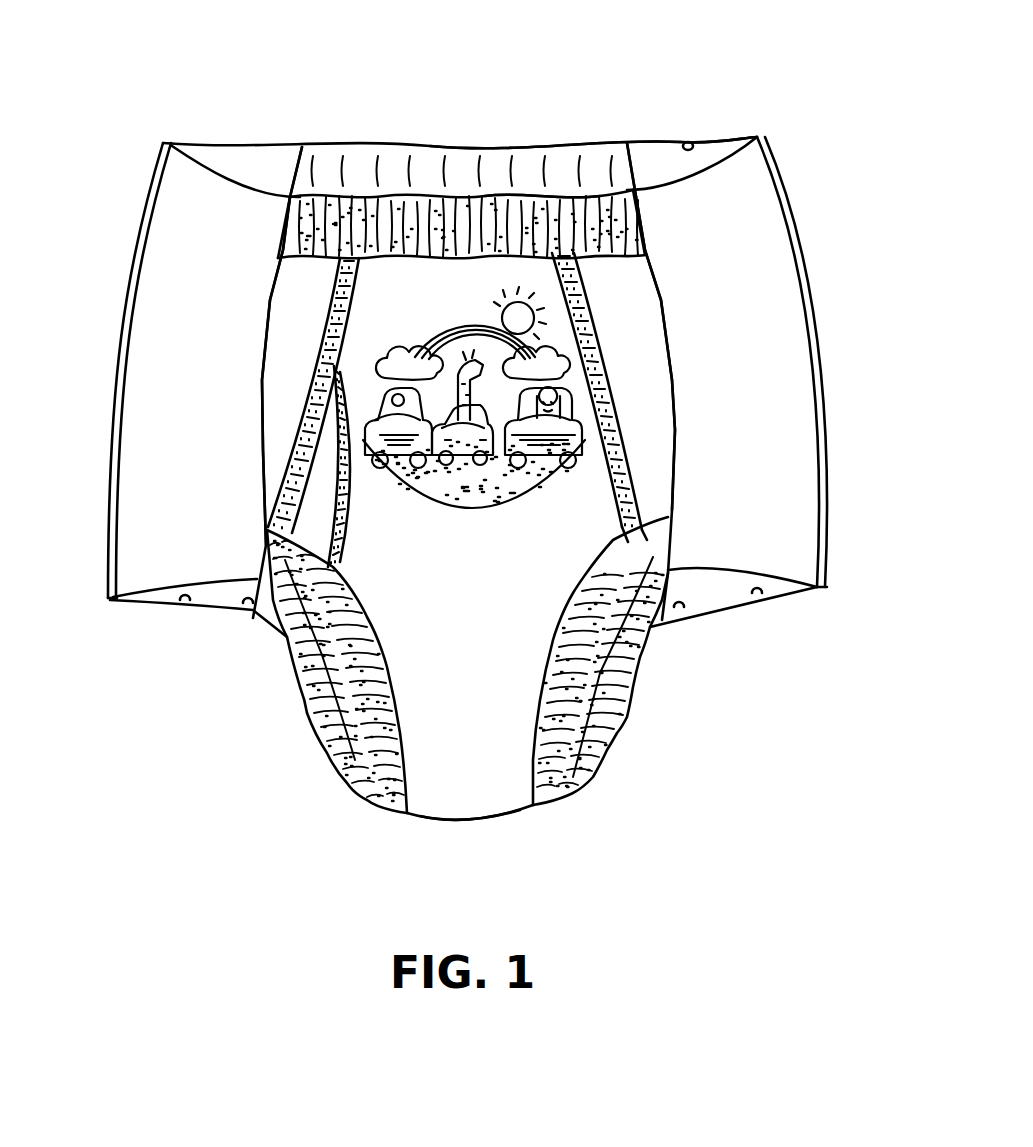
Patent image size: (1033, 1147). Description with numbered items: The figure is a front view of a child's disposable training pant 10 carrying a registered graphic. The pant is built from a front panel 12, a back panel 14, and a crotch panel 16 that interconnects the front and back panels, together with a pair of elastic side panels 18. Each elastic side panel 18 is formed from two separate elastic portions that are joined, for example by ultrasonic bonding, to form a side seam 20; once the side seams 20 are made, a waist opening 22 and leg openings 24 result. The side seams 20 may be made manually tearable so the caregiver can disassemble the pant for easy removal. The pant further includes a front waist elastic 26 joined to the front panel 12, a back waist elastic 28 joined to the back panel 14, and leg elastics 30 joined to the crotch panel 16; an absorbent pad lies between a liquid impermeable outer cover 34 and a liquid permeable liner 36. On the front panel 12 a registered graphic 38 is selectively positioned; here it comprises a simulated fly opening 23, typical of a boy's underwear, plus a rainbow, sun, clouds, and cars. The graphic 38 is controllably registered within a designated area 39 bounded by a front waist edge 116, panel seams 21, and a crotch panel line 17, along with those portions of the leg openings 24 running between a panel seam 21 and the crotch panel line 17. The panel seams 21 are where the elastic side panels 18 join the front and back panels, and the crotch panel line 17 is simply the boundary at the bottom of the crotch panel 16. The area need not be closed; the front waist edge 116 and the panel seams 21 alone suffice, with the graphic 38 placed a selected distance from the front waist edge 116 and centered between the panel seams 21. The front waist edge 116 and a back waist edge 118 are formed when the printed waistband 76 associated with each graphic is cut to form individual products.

The training pant 10 is at (650, 55).
The front panel 12 is at (300, 322).
The back panel 14 is at (282, 160).
The crotch panel 16 is at (437, 840).
The crotch panel line 17 is at (505, 820).
The elastic side panels 18 is at (158, 402).
The side seam 20 is at (127, 292).
The panel seams 21 is at (262, 383).
The waist opening 22 is at (688, 143).
The simulated fly opening 23 is at (290, 467).
The leg openings 24 is at (185, 600).
The front waist elastic 26 is at (613, 228).
The back waist elastic 28 is at (424, 165).
The leg elastics 30 is at (340, 767).
The outer cover 34 is at (652, 468).
The liner 36 is at (653, 615).
The registered graphic 38 is at (600, 322).
The designated area 39 is at (670, 513).
The printed waistband 76 is at (367, 198).
The front waist edge 116 is at (535, 190).
The back waist edge 118 is at (590, 140).